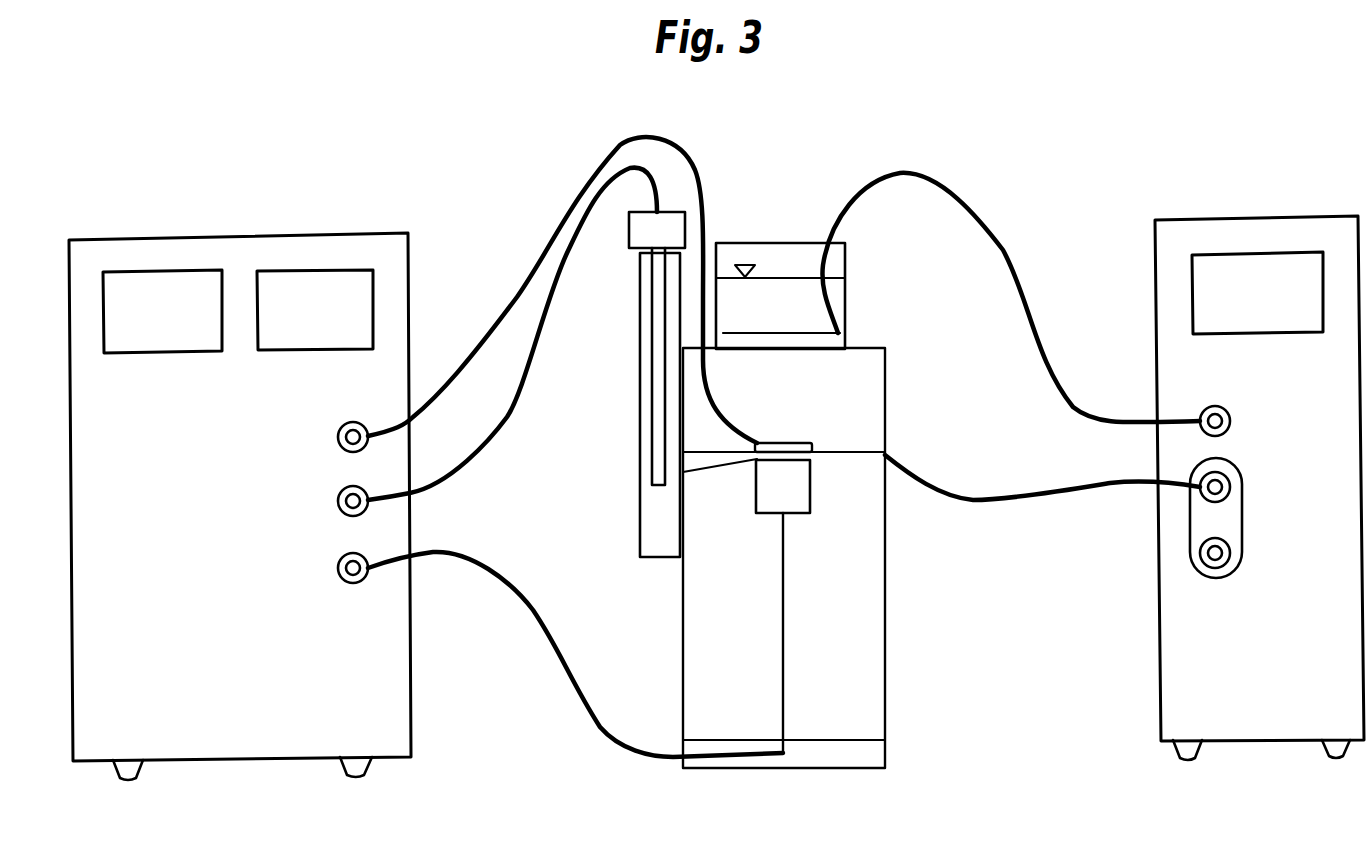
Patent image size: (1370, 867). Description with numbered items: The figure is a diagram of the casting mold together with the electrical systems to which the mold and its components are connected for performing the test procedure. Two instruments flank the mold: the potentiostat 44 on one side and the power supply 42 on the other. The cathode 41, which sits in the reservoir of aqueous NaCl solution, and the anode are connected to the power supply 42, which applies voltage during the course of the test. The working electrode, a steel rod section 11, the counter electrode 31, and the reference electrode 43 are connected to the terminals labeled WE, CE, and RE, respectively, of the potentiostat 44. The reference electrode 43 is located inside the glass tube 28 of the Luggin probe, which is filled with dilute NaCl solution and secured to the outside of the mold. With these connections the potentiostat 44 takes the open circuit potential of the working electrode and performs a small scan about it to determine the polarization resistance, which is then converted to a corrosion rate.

The steel rod section 11 is at (810, 497).
The glass tube 28 is at (636, 377).
The counter electrode 31 is at (793, 442).
The cathode 41 is at (787, 333).
The power supply 42 is at (1248, 740).
The reference electrode 43 is at (655, 455).
The potentiostat 44 is at (225, 761).